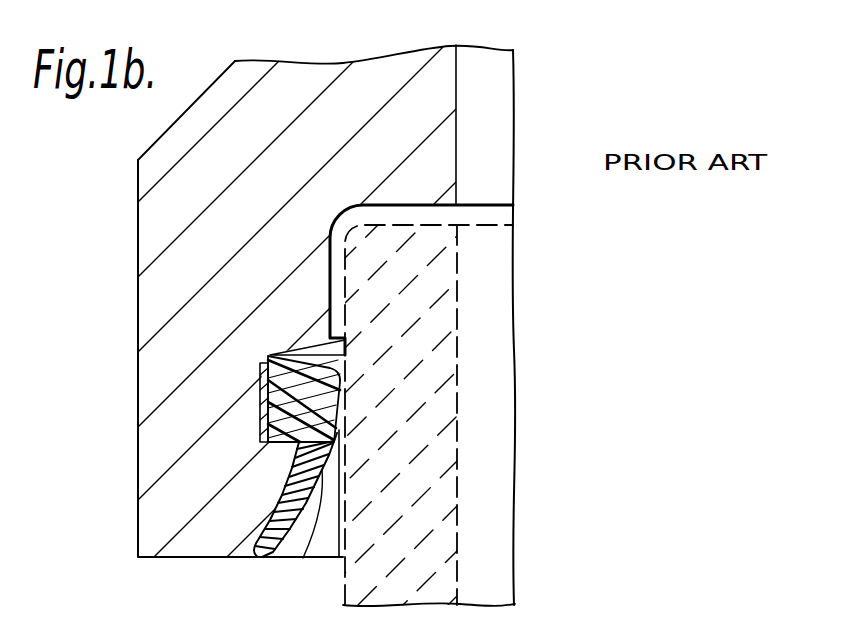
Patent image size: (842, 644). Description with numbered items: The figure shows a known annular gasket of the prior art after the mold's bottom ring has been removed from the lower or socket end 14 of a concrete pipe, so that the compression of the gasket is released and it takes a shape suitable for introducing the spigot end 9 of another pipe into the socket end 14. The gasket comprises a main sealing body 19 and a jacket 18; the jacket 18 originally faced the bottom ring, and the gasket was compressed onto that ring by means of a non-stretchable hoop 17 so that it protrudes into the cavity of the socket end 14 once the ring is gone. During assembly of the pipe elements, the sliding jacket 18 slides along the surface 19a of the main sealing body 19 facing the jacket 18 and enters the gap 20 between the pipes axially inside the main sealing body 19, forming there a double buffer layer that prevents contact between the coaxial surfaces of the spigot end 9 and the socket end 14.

The socket end 14 is at (297, 70).
The spigot end 9 is at (490, 337).
The gap 20 is at (340, 297).
The surface of the main sealing body 19a is at (350, 433).
The main sealing body 19 is at (260, 370).
The non-stretchable hoop 17 is at (263, 413).
The jacket 18 is at (316, 522).